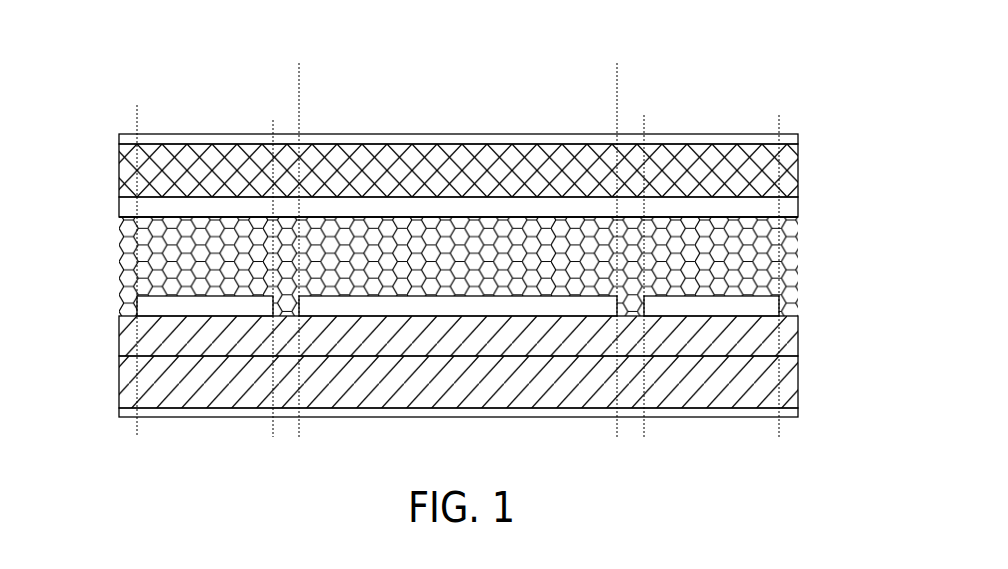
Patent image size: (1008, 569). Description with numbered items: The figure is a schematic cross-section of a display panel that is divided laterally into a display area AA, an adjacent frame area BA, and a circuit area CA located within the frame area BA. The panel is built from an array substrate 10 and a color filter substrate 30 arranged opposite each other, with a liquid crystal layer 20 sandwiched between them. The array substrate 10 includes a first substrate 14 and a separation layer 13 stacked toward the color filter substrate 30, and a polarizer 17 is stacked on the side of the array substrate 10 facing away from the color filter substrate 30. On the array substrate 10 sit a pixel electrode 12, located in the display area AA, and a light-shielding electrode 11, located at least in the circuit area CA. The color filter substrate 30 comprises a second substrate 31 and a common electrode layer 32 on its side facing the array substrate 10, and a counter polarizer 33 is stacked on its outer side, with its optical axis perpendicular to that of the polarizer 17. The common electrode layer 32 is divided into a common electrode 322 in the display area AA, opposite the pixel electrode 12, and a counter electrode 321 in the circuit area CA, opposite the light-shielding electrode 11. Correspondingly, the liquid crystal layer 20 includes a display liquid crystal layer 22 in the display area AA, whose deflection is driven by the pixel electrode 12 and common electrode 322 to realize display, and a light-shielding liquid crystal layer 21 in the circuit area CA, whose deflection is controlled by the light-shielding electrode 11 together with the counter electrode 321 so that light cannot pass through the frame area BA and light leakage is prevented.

The array substrate 10 is at (461, 377).
The light-shielding electrode 11 is at (760, 306).
The pixel electrode 12 is at (605, 307).
The separation layer 13 is at (798, 338).
The first substrate 14 is at (798, 380).
The polarizer 17 is at (798, 412).
The liquid crystal layer 20 is at (461, 339).
The light-shielding liquid crystal layer 21 is at (798, 248).
The display liquid crystal layer 22 is at (524, 272).
The color filter substrate 30 is at (461, 287).
The second substrate 31 is at (798, 173).
The common electrode layer 32 is at (799, 205).
The counter polarizer 33 is at (798, 137).
The counter electrode 321 is at (682, 207).
The common electrode 322 is at (420, 210).
The display area AA is at (446, 78).
The frame area BA is at (672, 65).
The circuit area CA is at (727, 133).